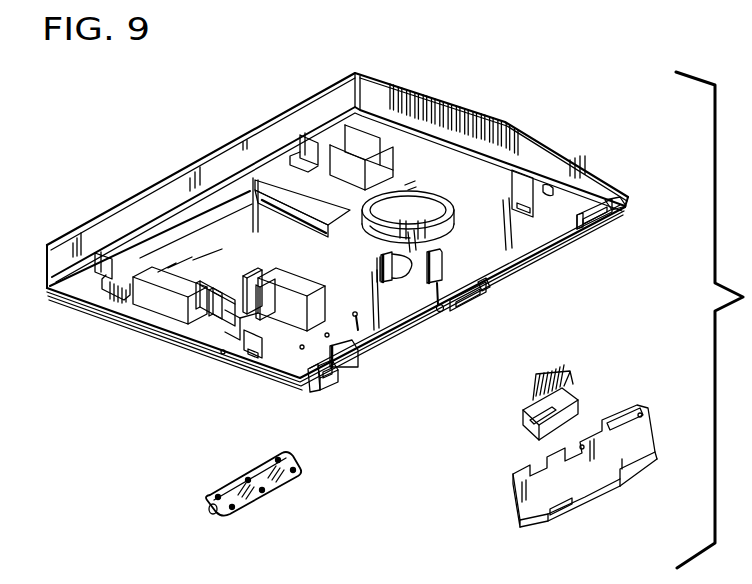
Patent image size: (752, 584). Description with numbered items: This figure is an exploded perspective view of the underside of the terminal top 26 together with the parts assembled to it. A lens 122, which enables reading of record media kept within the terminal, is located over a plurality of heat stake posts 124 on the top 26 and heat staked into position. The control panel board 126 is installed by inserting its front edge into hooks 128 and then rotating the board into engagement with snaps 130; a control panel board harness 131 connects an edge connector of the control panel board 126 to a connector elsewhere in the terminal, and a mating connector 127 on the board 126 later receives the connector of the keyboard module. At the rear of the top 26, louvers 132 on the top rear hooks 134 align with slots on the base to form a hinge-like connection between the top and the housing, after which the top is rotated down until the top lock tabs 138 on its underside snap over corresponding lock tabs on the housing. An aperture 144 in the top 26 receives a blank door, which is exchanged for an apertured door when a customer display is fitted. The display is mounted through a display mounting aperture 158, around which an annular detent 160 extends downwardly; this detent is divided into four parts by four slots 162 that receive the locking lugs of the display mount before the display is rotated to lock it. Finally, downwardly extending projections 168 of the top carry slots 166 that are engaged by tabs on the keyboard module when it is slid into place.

The top 26 is at (555, 150).
The lens 122 is at (255, 497).
The heat stake posts 124 is at (358, 328).
The control panel board 126 is at (620, 462).
The mating connector 127 is at (568, 510).
The hooks 128 is at (345, 362).
The snaps 130 is at (385, 283).
The control panel board harness 131 is at (560, 387).
The louvers 132 is at (317, 143).
The top rear hooks 134 is at (300, 143).
The top lock tabs 138 is at (533, 203).
The aperture 144 is at (152, 233).
The display mounting aperture 158 is at (437, 203).
The annular detent 160 is at (382, 227).
The slots 162 is at (413, 193).
The slots 166 is at (603, 230).
The downwardly extending projections 168 is at (615, 207).